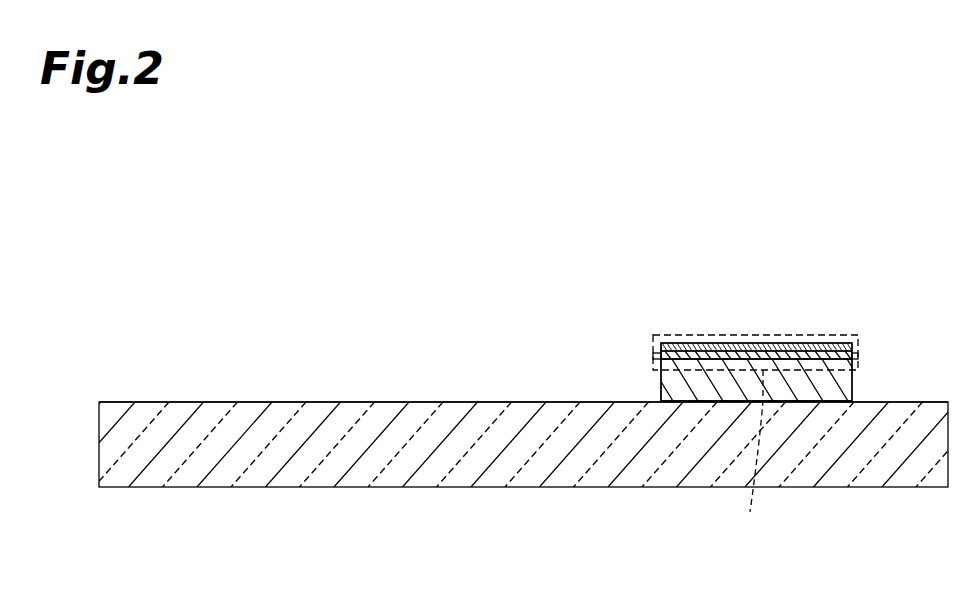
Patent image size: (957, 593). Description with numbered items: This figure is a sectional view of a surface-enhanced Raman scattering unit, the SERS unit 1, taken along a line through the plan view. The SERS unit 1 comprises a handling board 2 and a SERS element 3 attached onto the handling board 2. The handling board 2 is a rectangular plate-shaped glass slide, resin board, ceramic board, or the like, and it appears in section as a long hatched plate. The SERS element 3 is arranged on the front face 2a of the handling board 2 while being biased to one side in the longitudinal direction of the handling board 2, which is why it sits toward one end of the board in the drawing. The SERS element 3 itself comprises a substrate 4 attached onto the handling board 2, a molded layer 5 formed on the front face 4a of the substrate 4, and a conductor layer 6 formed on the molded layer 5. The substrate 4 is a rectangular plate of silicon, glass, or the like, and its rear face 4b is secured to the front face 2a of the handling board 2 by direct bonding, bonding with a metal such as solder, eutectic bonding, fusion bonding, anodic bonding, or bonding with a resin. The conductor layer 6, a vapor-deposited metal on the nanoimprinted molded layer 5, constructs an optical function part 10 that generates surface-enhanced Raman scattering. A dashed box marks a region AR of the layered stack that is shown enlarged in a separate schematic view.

The SERS unit 1 is at (858, 228).
The handling board 2 is at (340, 455).
The front face of the handling board 2a is at (458, 402).
The SERS element 3 is at (836, 331).
The substrate 4 is at (853, 380).
The front face of the substrate 4a is at (655, 355).
The rear face of the substrate 4b is at (680, 406).
The molded layer 5 is at (853, 356).
The conductor layer 6 is at (853, 344).
The region AR is at (688, 333).
The optical function part 10 is at (753, 457).